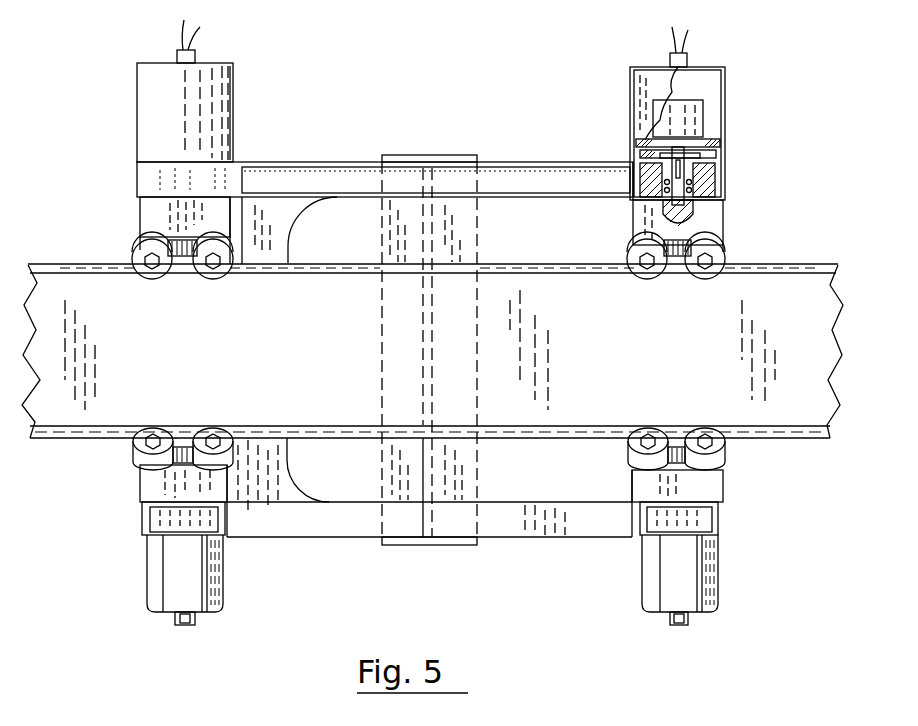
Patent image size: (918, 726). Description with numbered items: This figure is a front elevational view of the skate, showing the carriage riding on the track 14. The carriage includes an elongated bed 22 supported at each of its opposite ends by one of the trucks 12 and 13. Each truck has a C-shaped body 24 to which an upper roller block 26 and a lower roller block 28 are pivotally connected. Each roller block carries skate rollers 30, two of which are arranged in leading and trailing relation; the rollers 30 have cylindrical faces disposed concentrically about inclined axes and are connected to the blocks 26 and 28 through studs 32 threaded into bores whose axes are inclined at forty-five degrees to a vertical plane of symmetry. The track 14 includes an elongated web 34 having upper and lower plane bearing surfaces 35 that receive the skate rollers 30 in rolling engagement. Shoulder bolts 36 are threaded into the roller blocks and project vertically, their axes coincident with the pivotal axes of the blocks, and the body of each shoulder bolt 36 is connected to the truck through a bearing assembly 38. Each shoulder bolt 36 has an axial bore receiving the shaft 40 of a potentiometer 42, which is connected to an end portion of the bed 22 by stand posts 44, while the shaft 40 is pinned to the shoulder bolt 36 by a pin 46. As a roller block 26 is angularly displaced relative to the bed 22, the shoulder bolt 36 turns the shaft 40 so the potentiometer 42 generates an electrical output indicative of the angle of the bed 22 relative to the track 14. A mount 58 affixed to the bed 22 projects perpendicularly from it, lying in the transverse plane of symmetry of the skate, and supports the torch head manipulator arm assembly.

The truck 12 is at (110, 217).
The truck 13 is at (752, 242).
The track 14 is at (352, 257).
The elongated bed 22 is at (316, 161).
The C-shaped body 24 is at (152, 520).
The upper roller block 26 is at (150, 212).
The lower roller block 28 is at (155, 483).
The skate roller 30 is at (135, 243).
The stud 32 is at (214, 430).
The elongated web 34 is at (234, 352).
The plane bearing surface 35 is at (523, 270).
The shoulder bolt 36 is at (664, 192).
The bearing assembly 38 is at (698, 190).
The shaft 40 is at (700, 155).
The potentiometer 42 is at (703, 110).
The stand post 44 is at (646, 140).
The pin 46 is at (643, 153).
The mount 58 is at (470, 485).